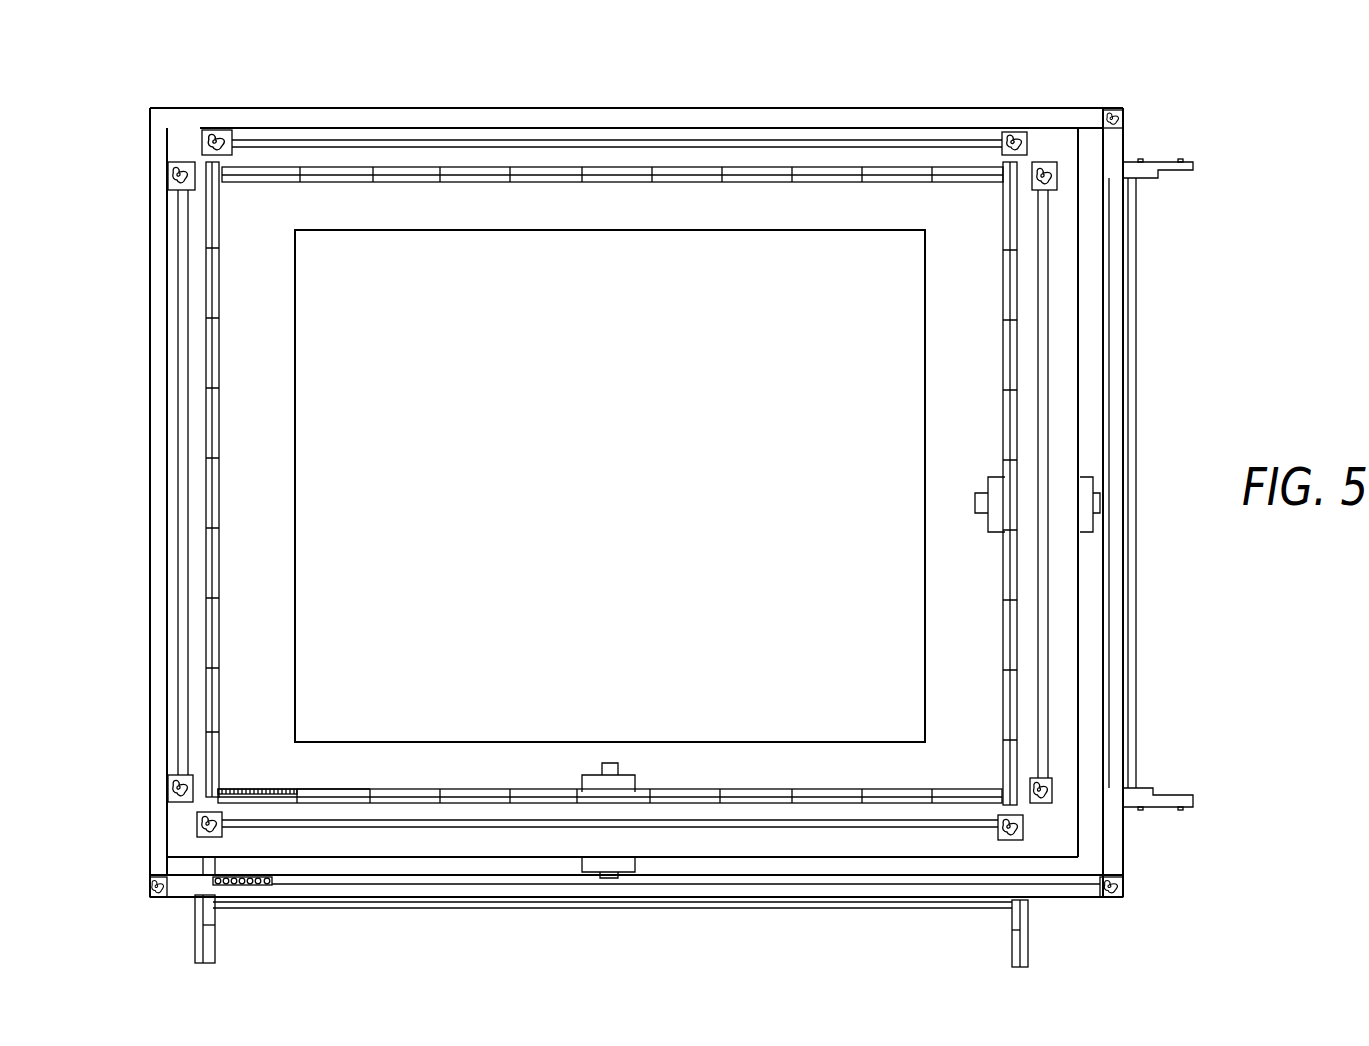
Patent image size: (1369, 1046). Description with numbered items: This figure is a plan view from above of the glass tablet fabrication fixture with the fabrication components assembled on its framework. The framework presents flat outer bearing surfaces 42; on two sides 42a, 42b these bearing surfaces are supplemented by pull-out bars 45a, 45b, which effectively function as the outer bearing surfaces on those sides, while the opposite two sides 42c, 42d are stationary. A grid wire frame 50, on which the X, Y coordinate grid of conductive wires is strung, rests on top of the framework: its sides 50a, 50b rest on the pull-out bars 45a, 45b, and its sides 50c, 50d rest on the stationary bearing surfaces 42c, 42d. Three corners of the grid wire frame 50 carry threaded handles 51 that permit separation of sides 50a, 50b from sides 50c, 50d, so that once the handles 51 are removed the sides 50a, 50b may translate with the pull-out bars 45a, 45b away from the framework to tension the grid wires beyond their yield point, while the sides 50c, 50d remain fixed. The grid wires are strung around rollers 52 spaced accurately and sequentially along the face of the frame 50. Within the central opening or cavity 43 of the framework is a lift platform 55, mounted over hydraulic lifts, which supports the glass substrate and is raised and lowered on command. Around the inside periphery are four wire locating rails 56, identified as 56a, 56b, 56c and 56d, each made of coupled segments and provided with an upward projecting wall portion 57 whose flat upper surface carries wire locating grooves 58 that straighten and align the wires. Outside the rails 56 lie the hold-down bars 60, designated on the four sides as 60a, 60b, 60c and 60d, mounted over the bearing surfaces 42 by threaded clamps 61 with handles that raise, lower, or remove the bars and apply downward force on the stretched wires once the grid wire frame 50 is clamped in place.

The flat outer bearing surfaces 42 is at (653, 510).
The fixture framework side 42a is at (1062, 400).
The fixture framework side 42b is at (912, 845).
The outer bearing surface side 42c is at (167, 586).
The outer bearing surface side 42d is at (365, 135).
The central opening or cavity 43 is at (265, 431).
The pull-out bar 45a is at (1130, 680).
The pull-out bar 45b is at (803, 906).
The grid wire frame 50 is at (652, 510).
The grid wire frame side 50a is at (1112, 552).
The grid wire frame side 50b is at (752, 890).
The grid wire frame side 50c is at (157, 283).
The grid wire frame side 50d is at (463, 107).
The threaded handles 51 is at (1123, 120).
The rollers 52 is at (258, 890).
The lift platform 55 is at (602, 474).
The wire locating rails 56 is at (611, 520).
The wire locating rail 56a is at (1003, 280).
The wire locating rail 56b is at (802, 800).
The wire locating rail 56c is at (214, 572).
The wire locating rail 56d is at (495, 172).
The upward projecting wall portion 57 is at (355, 790).
The wire locating grooves 58 is at (270, 790).
The hold-down bars 60 is at (653, 510).
The hold-down bar 60a is at (1046, 640).
The hold-down bar 60b is at (717, 830).
The hold-down bar 60c is at (178, 416).
The hold-down bar 60d is at (603, 140).
The threaded clamps 61 is at (112, 190).